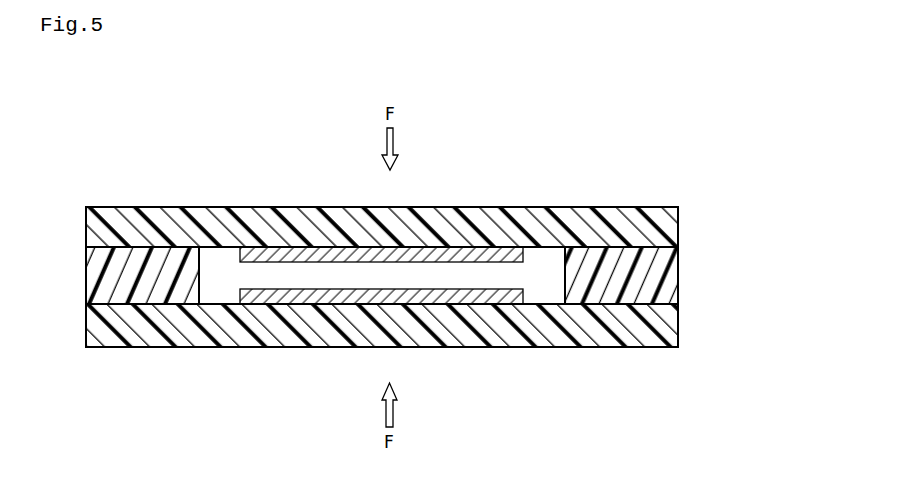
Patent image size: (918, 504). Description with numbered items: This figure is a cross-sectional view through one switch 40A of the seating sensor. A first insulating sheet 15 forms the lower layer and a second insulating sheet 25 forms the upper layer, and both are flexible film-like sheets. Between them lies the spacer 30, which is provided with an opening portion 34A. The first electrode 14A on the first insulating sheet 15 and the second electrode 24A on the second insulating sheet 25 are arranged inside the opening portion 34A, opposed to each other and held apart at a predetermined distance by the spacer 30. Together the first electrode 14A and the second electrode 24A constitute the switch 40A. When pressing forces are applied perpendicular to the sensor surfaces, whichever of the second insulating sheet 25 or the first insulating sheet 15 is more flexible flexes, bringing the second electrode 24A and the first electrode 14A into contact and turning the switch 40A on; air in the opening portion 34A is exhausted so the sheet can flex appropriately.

The first insulating sheet 15 is at (242, 326).
The second insulating sheet 25 is at (257, 220).
The spacer 30 is at (149, 262).
The opening portion 34A is at (533, 275).
The first electrode 14A is at (420, 300).
The second electrode 24A is at (455, 258).
The switch 40A is at (403, 367).